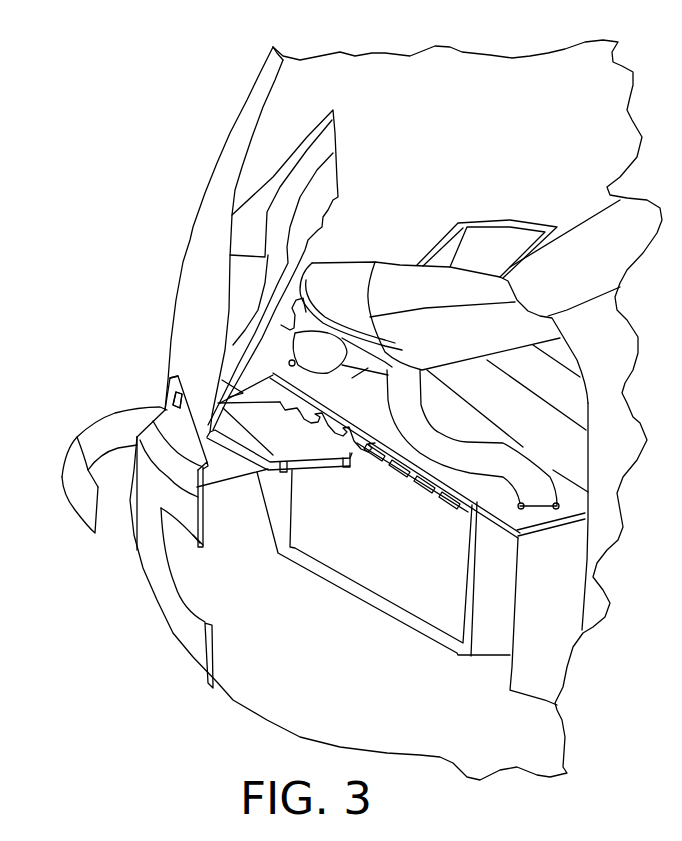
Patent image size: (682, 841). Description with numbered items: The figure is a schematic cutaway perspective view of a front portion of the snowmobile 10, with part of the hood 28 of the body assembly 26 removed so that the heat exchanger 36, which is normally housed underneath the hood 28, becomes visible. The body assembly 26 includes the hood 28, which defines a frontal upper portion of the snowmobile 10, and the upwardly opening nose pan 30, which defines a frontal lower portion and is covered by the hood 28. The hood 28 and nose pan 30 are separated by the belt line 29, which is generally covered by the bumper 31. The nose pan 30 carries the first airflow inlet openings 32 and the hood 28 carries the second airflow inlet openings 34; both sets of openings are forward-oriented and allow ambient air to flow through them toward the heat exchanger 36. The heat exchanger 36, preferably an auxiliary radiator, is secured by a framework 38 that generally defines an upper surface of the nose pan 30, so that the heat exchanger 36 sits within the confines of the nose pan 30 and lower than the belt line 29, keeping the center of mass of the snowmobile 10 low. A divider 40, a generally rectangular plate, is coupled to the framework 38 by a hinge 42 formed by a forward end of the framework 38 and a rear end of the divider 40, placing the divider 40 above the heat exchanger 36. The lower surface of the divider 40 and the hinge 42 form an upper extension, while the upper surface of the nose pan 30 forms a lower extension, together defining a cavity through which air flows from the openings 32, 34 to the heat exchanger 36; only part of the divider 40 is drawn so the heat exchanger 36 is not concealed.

The snowmobile 10 is at (87, 144).
The body assembly 26 is at (214, 152).
The hood 28 is at (191, 256).
The belt line 29 is at (155, 423).
The nose pan 30 is at (185, 640).
The bumper 31 is at (70, 467).
The first airflow inlet openings 32 is at (177, 560).
The second airflow inlet openings 34 is at (178, 408).
The heat exchanger 36 is at (430, 615).
The framework 38 is at (523, 522).
The divider 40 is at (302, 448).
The hinge 42 is at (432, 505).